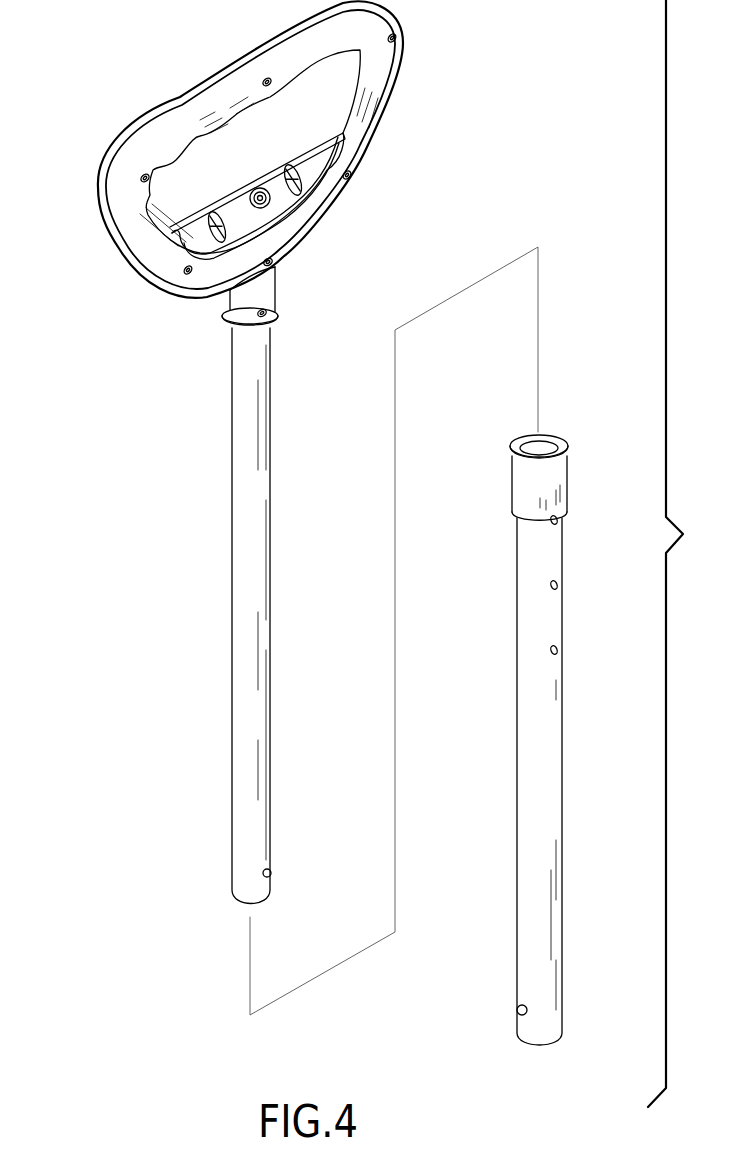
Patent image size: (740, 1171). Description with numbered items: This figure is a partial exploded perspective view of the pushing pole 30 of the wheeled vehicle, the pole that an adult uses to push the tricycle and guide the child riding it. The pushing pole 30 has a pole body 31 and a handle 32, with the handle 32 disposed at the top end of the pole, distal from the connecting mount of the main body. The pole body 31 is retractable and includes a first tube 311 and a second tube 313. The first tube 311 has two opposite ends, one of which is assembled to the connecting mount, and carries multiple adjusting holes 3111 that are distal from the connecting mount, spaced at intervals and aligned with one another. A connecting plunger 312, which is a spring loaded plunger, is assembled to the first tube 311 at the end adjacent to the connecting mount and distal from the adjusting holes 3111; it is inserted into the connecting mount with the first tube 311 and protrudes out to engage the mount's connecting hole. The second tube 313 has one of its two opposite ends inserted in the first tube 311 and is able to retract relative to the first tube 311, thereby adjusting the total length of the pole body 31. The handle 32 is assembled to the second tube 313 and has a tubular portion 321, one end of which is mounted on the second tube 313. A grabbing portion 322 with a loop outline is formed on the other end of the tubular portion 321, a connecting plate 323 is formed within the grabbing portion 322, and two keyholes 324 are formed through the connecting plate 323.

The pushing pole 30 is at (160, 935).
The pole body 31 is at (243, 452).
The first tube 311 is at (535, 751).
The adjusting holes 3111 is at (558, 651).
The connecting plunger 312 is at (517, 1012).
The second tube 313 is at (245, 469).
The handle 32 is at (243, 164).
The tubular portion 321 is at (263, 288).
The grabbing portion 322 is at (282, 57).
The connecting plate 323 is at (325, 152).
The keyholes 324 is at (300, 197).